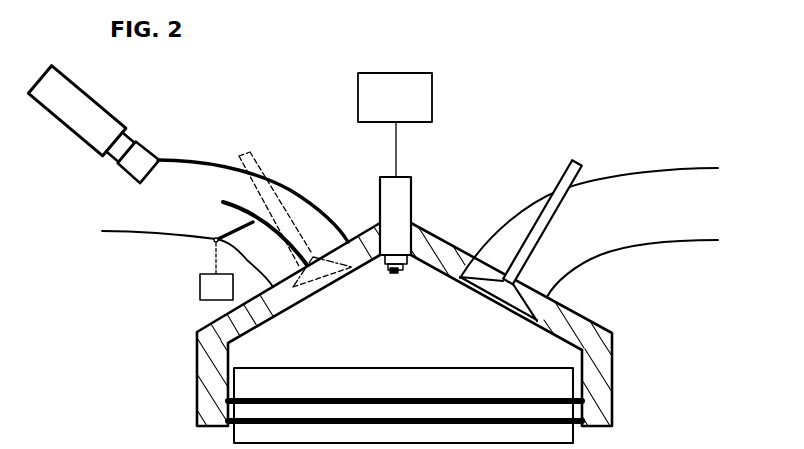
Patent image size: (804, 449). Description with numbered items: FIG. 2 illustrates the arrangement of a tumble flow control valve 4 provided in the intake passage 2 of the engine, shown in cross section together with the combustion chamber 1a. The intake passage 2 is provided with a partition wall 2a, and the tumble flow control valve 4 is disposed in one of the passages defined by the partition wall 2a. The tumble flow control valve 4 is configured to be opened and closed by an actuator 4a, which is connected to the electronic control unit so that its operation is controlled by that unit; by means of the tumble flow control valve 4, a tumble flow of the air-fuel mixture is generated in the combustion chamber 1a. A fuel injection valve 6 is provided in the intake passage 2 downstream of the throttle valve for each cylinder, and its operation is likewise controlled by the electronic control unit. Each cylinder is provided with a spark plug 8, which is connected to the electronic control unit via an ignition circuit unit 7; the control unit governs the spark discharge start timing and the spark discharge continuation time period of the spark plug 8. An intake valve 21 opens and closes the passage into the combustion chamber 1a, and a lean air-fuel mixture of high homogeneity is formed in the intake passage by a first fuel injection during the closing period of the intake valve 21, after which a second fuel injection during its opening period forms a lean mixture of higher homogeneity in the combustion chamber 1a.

The combustion chamber 1a is at (414, 351).
The intake passage 2 is at (150, 232).
The partition wall 2a is at (232, 201).
The tumble flow control valve 4 is at (237, 231).
The actuator 4a is at (200, 286).
The fuel injection valve 6 is at (104, 110).
The ignition circuit unit 7 is at (434, 97).
The spark plug 8 is at (412, 190).
The intake valve 21 is at (313, 257).